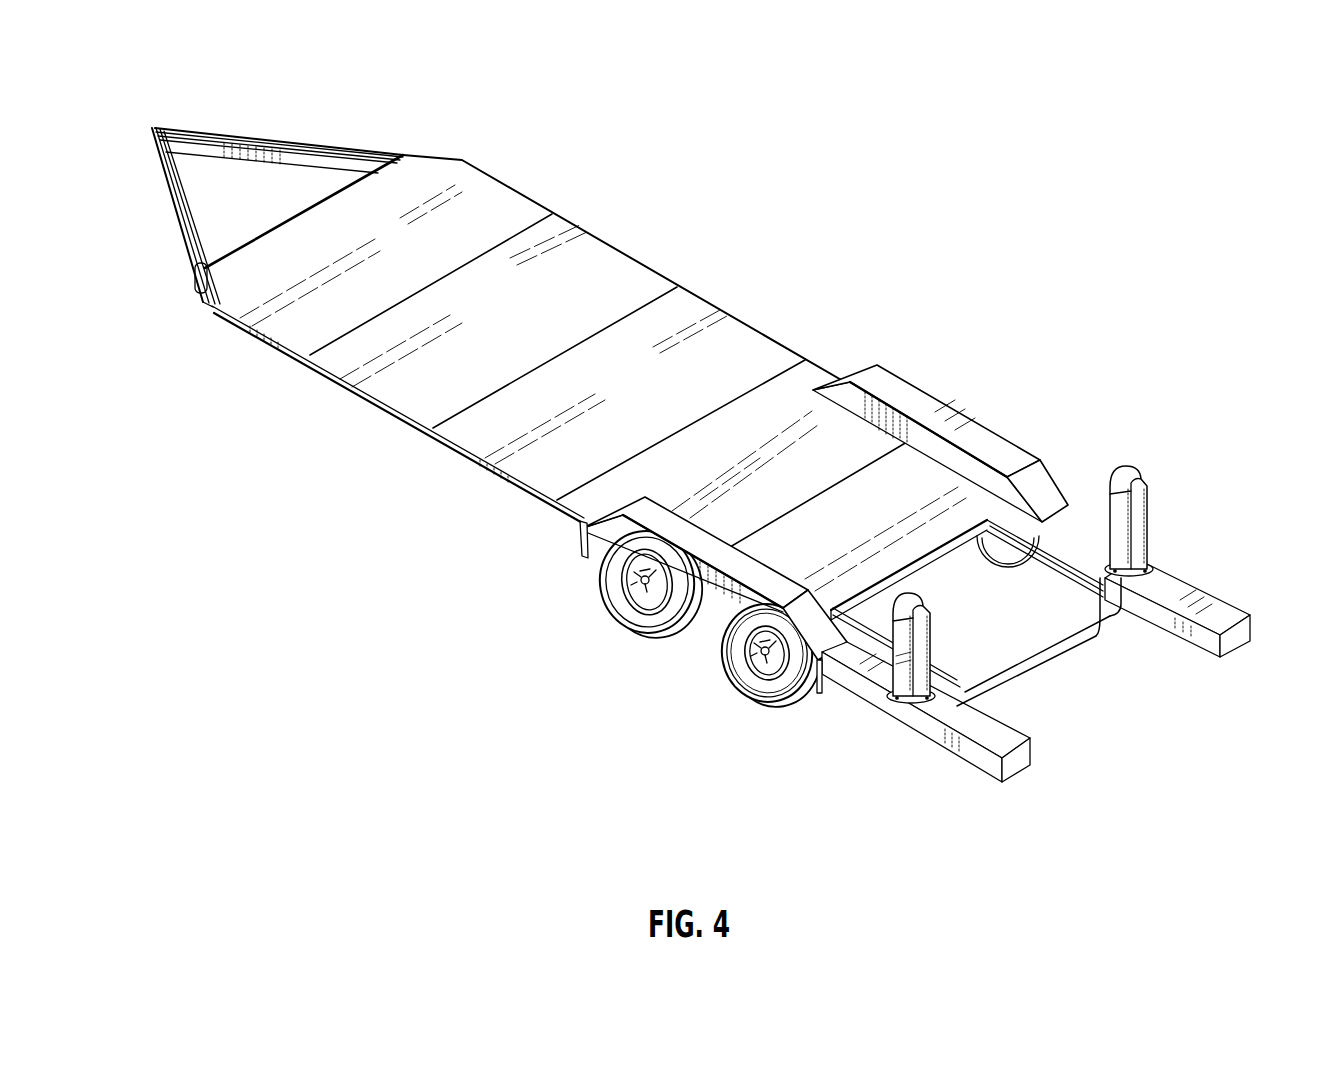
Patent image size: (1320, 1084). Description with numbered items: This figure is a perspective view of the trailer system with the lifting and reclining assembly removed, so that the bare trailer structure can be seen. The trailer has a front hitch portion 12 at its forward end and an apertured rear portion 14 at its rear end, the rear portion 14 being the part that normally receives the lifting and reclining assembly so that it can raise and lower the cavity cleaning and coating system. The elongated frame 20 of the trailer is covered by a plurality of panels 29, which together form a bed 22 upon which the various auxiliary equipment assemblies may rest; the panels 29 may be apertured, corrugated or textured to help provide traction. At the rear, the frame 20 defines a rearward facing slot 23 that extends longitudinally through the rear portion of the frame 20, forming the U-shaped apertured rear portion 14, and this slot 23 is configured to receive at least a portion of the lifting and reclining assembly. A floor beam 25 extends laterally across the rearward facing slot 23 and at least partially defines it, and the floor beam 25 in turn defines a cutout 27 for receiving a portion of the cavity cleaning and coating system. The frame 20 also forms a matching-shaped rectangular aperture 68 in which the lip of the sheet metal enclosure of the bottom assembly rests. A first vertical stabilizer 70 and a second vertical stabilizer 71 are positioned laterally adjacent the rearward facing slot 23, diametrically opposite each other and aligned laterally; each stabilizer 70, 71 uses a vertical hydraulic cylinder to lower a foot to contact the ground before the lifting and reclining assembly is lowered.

The front hitch portion 12 is at (180, 125).
The panels 29 is at (353, 237).
The bed 22 is at (592, 278).
The frame 20 is at (358, 404).
The rectangular aperture 68 is at (1048, 547).
The second vertical stabilizer 71 is at (1153, 534).
The first vertical stabilizer 70 is at (935, 639).
The cutout 27 is at (1080, 618).
The floor beam 25 is at (1038, 678).
The rearward facing slot 23 is at (1159, 645).
The apertured rear portion 14 is at (957, 712).